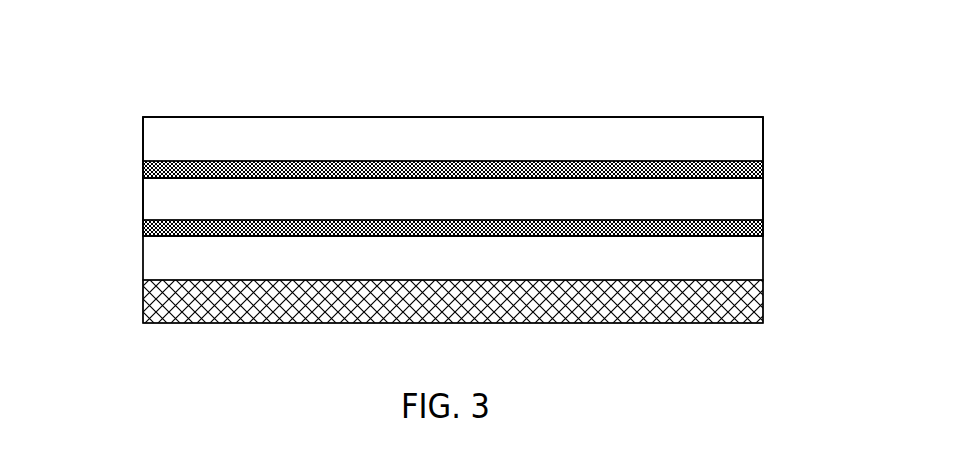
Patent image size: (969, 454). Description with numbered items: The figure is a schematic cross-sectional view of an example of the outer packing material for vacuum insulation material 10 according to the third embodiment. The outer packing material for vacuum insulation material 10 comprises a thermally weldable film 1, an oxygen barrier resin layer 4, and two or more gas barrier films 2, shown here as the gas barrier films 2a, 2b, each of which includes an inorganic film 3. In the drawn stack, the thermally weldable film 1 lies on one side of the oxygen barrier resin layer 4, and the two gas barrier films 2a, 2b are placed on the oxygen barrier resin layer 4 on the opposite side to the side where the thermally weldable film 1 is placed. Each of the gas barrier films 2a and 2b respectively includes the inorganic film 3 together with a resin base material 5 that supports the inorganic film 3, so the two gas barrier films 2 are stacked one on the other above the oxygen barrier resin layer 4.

The outer packing material for vacuum insulation material 10 is at (690, 62).
The thermally weldable film 1 is at (763, 300).
The oxygen barrier resin layer 4 is at (760, 263).
The gas barrier film 2 is at (448, 177).
The gas barrier film 2a is at (138, 180).
The gas barrier film 2b is at (138, 118).
The inorganic film 3 is at (763, 163).
The resin base material 5 is at (747, 141).